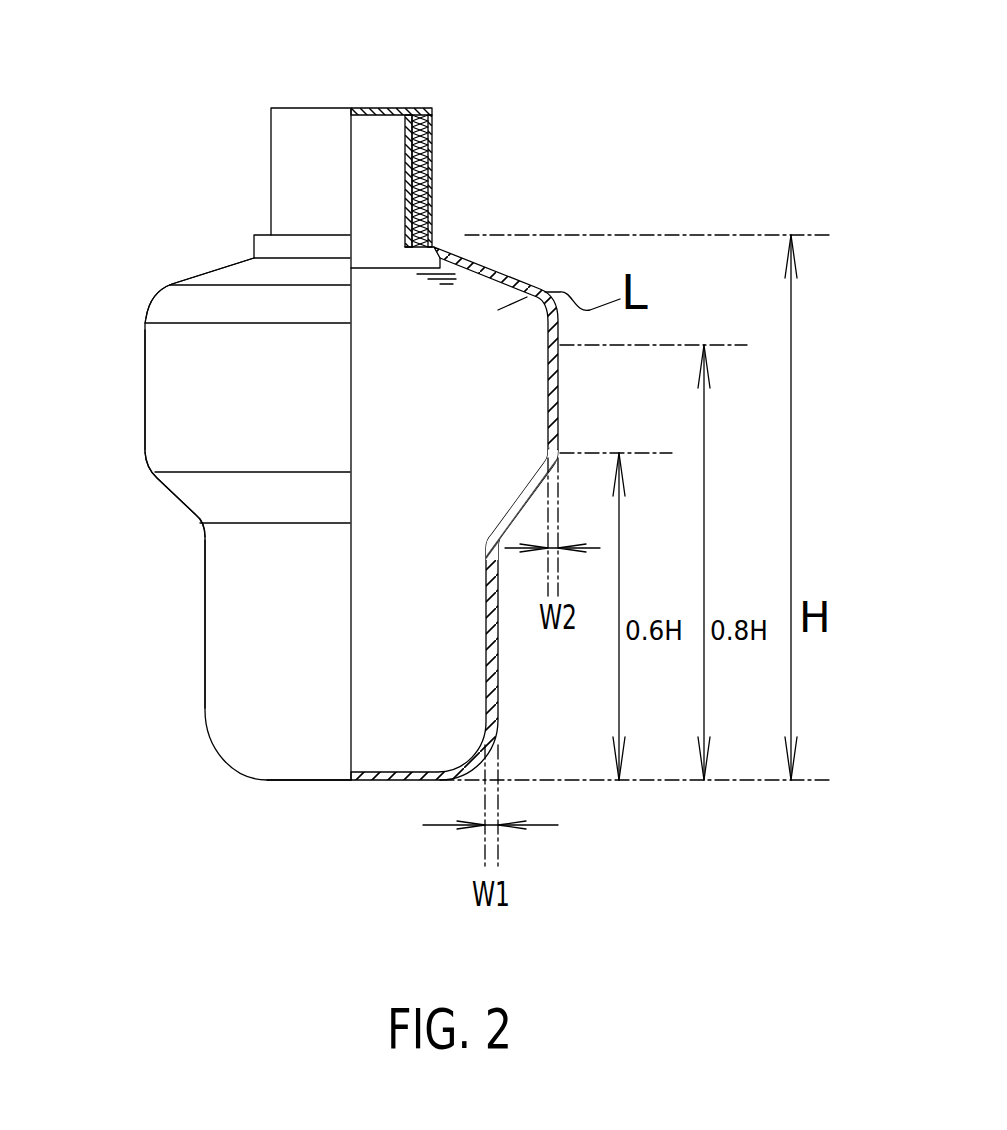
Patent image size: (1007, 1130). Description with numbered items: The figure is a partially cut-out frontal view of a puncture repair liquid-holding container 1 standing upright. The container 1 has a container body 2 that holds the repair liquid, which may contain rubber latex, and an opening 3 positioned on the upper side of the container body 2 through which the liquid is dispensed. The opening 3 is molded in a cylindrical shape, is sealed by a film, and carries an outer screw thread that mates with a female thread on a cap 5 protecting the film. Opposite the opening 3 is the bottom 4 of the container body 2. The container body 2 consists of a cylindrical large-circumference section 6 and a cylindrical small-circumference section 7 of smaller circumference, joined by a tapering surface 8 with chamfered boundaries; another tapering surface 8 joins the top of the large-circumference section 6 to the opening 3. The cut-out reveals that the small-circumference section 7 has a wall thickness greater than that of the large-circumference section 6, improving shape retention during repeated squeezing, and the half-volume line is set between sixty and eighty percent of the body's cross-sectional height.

The puncture repair liquid-holding container 1 is at (354, 465).
The container body 2 is at (145, 323).
The opening 3 is at (406, 182).
The bottom 4 is at (310, 780).
The cap 5 is at (385, 108).
The large-circumference section 6 is at (167, 425).
The small-circumference section 7 is at (225, 703).
The tapering surface 8 is at (218, 270).